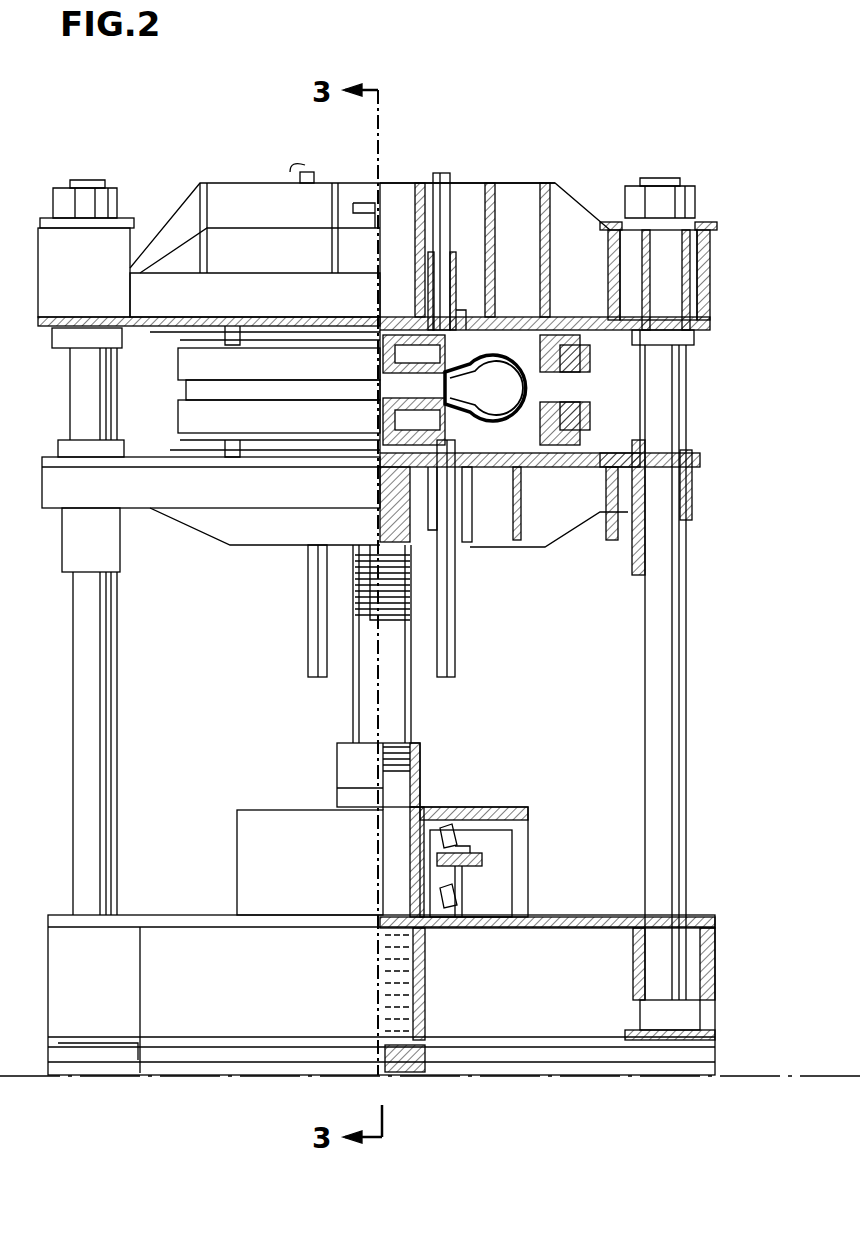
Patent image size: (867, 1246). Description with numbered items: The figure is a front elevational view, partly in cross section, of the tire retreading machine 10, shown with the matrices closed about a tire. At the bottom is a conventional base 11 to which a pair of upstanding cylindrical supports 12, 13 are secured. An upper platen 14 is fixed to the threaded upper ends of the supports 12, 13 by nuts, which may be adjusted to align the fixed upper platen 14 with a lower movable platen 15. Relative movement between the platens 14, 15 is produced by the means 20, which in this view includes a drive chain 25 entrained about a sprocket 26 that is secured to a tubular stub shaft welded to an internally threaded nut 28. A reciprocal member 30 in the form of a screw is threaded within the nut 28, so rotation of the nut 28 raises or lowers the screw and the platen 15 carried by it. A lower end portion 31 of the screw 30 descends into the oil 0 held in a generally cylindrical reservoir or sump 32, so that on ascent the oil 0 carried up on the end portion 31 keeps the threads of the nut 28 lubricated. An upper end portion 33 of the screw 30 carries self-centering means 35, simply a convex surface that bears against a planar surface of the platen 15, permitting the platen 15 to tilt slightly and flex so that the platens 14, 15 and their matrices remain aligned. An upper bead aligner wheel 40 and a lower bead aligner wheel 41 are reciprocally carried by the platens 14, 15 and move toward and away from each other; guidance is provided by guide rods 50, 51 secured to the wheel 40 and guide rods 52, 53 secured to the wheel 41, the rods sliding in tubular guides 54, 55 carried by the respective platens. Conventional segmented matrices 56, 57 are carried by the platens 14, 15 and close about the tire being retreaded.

The machine 10 is at (466, 82).
The base 11 is at (584, 996).
The cylindrical support 12 is at (82, 658).
The cylindrical support 13 is at (668, 684).
The upper platen 14 is at (572, 198).
The lower movable platen 15 is at (548, 540).
The means for imparting relative movement 20 is at (455, 745).
The drive chain 25 is at (498, 830).
The sprocket 26 is at (472, 870).
The internally threaded nut 28 is at (422, 770).
The reciprocal member 30 is at (408, 698).
The lower end portion 31 is at (392, 842).
The reservoir or sump 32 is at (425, 995).
The upper end portion 33 is at (380, 486).
The self-centering means 35 is at (378, 420).
The upper bead aligner wheel 40 is at (452, 372).
The lower bead aligner wheel 41 is at (448, 408).
The guide rod 50 is at (310, 166).
The guide rod 51 is at (450, 178).
The guide rod 52 is at (310, 645).
The guide rod 53 is at (455, 625).
The tubular guide 54 is at (455, 270).
The tubular guide 55 is at (462, 510).
The segmented matrix 56 is at (565, 355).
The segmented matrix 57 is at (572, 415).
The unidentified part 0 is at (402, 966).